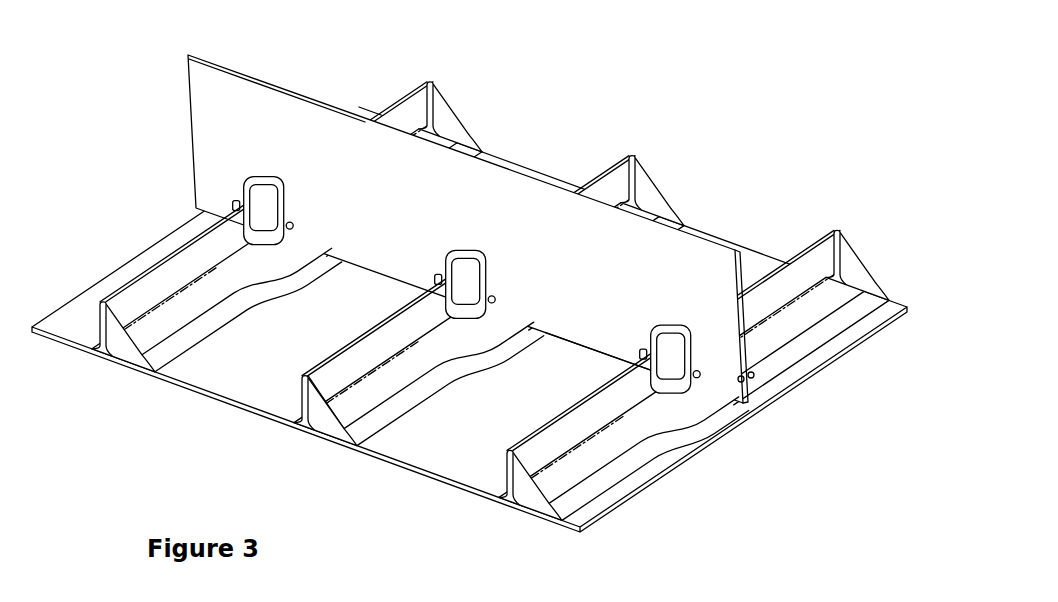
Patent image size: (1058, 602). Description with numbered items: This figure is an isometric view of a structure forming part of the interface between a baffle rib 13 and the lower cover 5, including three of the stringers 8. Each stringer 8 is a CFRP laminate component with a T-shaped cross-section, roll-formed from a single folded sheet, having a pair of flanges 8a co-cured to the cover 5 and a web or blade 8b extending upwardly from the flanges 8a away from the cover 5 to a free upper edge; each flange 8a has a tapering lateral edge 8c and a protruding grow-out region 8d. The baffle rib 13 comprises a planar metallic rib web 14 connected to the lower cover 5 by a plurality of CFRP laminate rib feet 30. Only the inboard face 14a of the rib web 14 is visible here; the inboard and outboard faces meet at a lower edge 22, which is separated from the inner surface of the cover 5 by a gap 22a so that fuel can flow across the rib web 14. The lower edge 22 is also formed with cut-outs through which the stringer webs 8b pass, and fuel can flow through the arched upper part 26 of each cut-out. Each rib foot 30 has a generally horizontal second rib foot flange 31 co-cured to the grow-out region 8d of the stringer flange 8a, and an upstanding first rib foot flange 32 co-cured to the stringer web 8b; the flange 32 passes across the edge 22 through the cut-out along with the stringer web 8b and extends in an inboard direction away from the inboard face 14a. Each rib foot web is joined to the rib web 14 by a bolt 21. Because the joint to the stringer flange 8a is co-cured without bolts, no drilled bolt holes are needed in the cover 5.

The lower cover 5 is at (213, 370).
The stringer 8 is at (443, 95).
The flange 8a is at (431, 408).
The web 8b is at (374, 318).
The tapering lateral edge 8c is at (439, 380).
The grow-out region 8d is at (415, 383).
The baffle rib 13 is at (476, 282).
The rib web 14 is at (439, 217).
The inboard face 14a is at (222, 112).
The bolt 21 is at (743, 380).
The lower edge 22 is at (247, 310).
The gap 22a is at (572, 357).
The arched upper part 26 is at (243, 183).
The rib foot 30 is at (669, 405).
The second rib foot flange 31 is at (754, 375).
The first rib foot flange 32 is at (470, 300).